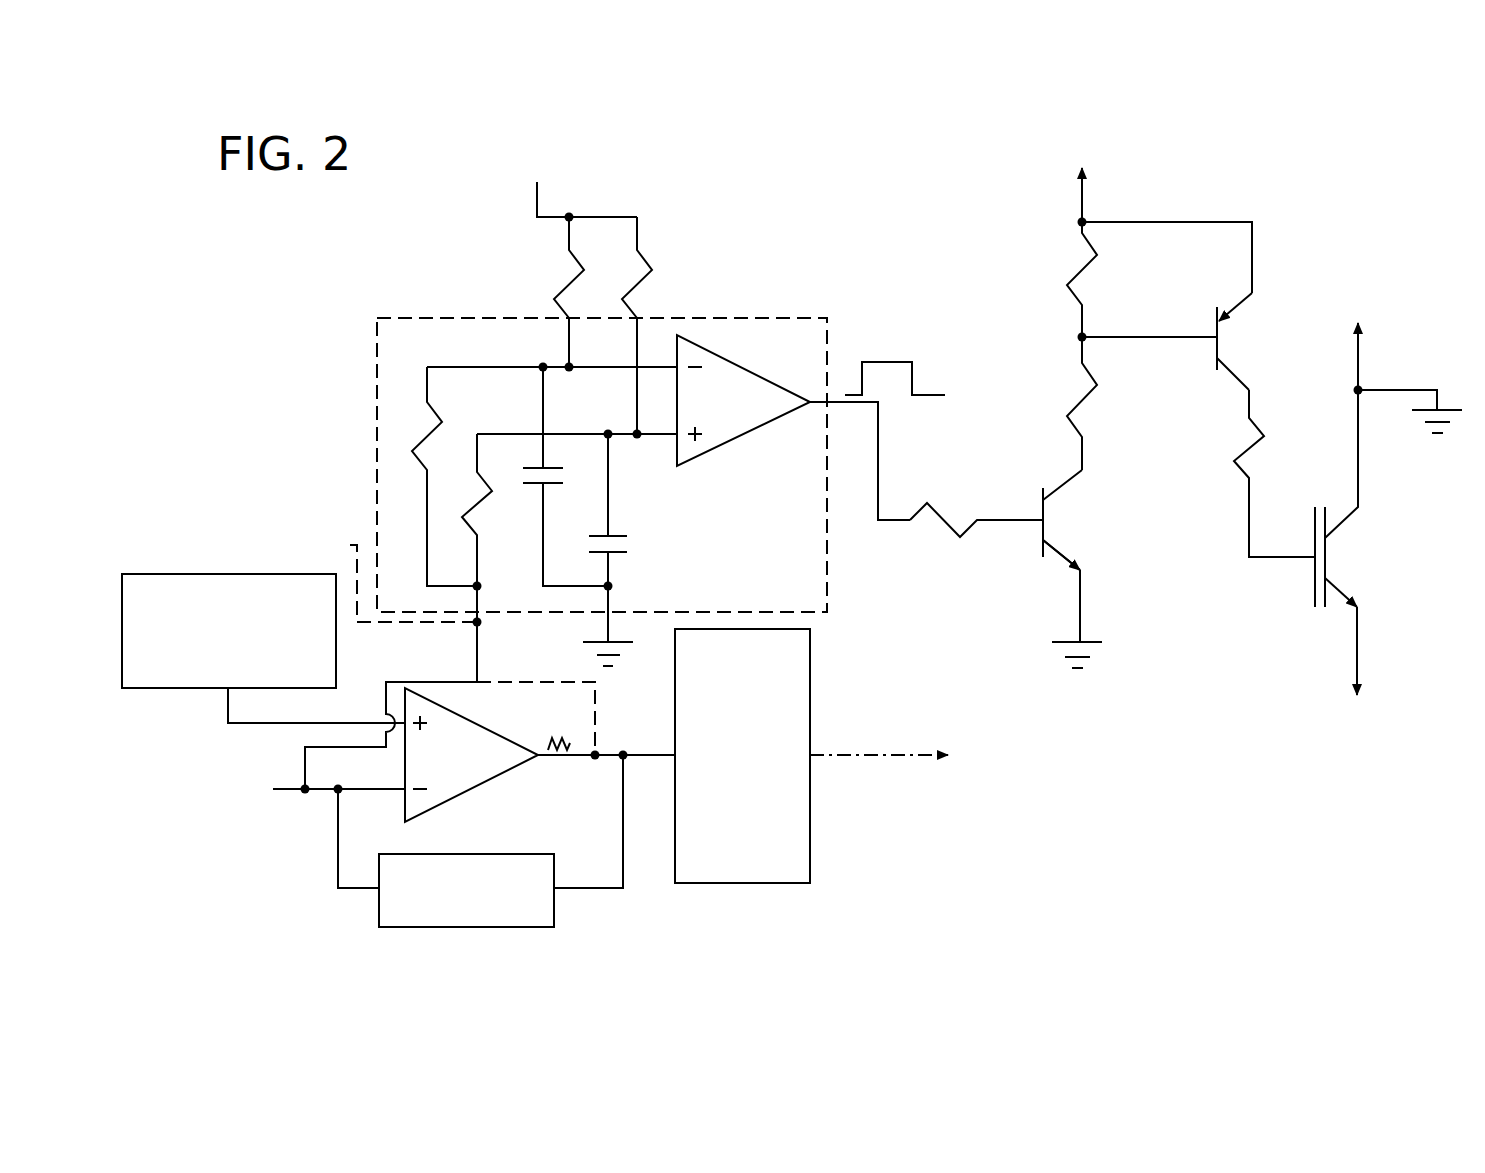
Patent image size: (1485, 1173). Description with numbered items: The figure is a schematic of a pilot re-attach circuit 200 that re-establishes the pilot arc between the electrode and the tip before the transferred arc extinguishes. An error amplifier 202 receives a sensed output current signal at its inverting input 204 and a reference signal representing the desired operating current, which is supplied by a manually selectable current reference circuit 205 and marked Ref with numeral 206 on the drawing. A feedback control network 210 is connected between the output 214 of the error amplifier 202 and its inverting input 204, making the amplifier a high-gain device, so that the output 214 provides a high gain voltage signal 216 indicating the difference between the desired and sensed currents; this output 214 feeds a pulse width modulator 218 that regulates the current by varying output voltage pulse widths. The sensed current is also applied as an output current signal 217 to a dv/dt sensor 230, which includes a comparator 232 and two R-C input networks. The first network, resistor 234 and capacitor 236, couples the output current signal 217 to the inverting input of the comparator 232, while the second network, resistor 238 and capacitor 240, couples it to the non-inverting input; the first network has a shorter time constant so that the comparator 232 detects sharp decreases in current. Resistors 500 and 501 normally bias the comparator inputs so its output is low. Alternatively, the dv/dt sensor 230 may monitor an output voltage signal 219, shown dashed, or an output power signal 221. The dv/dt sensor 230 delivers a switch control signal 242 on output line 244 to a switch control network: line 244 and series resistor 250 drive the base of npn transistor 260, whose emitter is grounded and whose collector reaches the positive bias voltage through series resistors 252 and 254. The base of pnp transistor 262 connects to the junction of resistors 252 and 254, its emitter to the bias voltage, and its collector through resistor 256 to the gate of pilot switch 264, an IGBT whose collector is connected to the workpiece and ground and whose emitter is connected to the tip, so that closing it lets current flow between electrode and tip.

The pilot re-attach circuit 200 is at (811, 132).
The error amplifier 202 is at (443, 802).
The inverting input 204 is at (320, 786).
The current reference circuit 205 is at (227, 570).
The reference signal input 206 is at (361, 718).
The feedback control network 210 is at (462, 931).
The output 214 is at (591, 757).
The high gain voltage signal 216 is at (580, 745).
The output current signal 217 is at (461, 681).
The pulse width modulator 218 is at (810, 857).
The output voltage signal 219 is at (500, 679).
The output power signal 221 is at (394, 578).
The dv/dt sensor 230 is at (493, 314).
The comparator 232 is at (752, 432).
The resistor 234 is at (425, 435).
The capacitor 236 is at (531, 463).
The resistor 238 is at (477, 505).
The capacitor 240 is at (613, 535).
The switch control signal 242 is at (913, 358).
The output line 244 is at (878, 470).
The resistor 250 is at (920, 513).
The resistor 252 is at (1073, 297).
The resistor 254 is at (1073, 420).
The resistor 256 is at (1232, 473).
The npn transistor 260 is at (1063, 552).
The pnp transistor 262 is at (1213, 330).
The pilot switch 264 is at (1337, 588).
The resistor 500 is at (567, 290).
The resistor 501 is at (650, 274).